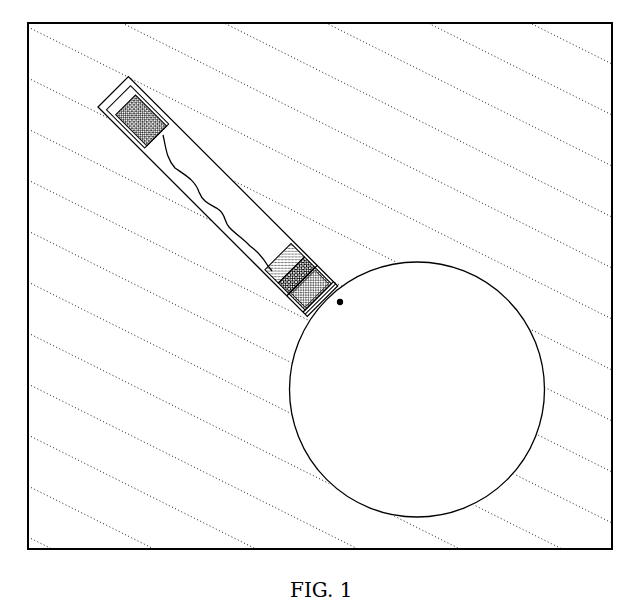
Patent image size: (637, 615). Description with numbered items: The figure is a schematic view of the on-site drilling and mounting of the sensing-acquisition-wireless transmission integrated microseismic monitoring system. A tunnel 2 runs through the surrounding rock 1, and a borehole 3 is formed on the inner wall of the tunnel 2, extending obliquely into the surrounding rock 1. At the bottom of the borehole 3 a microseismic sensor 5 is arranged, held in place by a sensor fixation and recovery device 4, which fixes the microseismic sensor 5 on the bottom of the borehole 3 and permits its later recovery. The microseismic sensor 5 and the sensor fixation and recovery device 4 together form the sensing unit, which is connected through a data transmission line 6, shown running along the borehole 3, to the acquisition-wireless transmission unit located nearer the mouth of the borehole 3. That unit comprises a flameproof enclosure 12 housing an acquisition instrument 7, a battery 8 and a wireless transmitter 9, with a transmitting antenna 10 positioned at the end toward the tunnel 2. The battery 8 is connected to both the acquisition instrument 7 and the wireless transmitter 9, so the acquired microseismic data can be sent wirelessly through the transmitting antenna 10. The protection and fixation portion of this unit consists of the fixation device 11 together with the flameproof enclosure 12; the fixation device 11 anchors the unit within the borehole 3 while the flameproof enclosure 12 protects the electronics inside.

The surrounding rock 1 is at (320, 307).
The tunnel 2 is at (417, 389).
The borehole 3 is at (215, 208).
The sensor fixation and recovery device 4 is at (153, 105).
The microseismic sensor 5 is at (163, 127).
The data transmission line 6 is at (197, 185).
The acquisition instrument 7 is at (283, 262).
The battery 8 is at (296, 280).
The wireless transmitter 9 is at (304, 305).
The transmitting antenna 10 is at (341, 301).
The fixation device 11 is at (338, 285).
The flameproof enclosure 12 is at (292, 290).